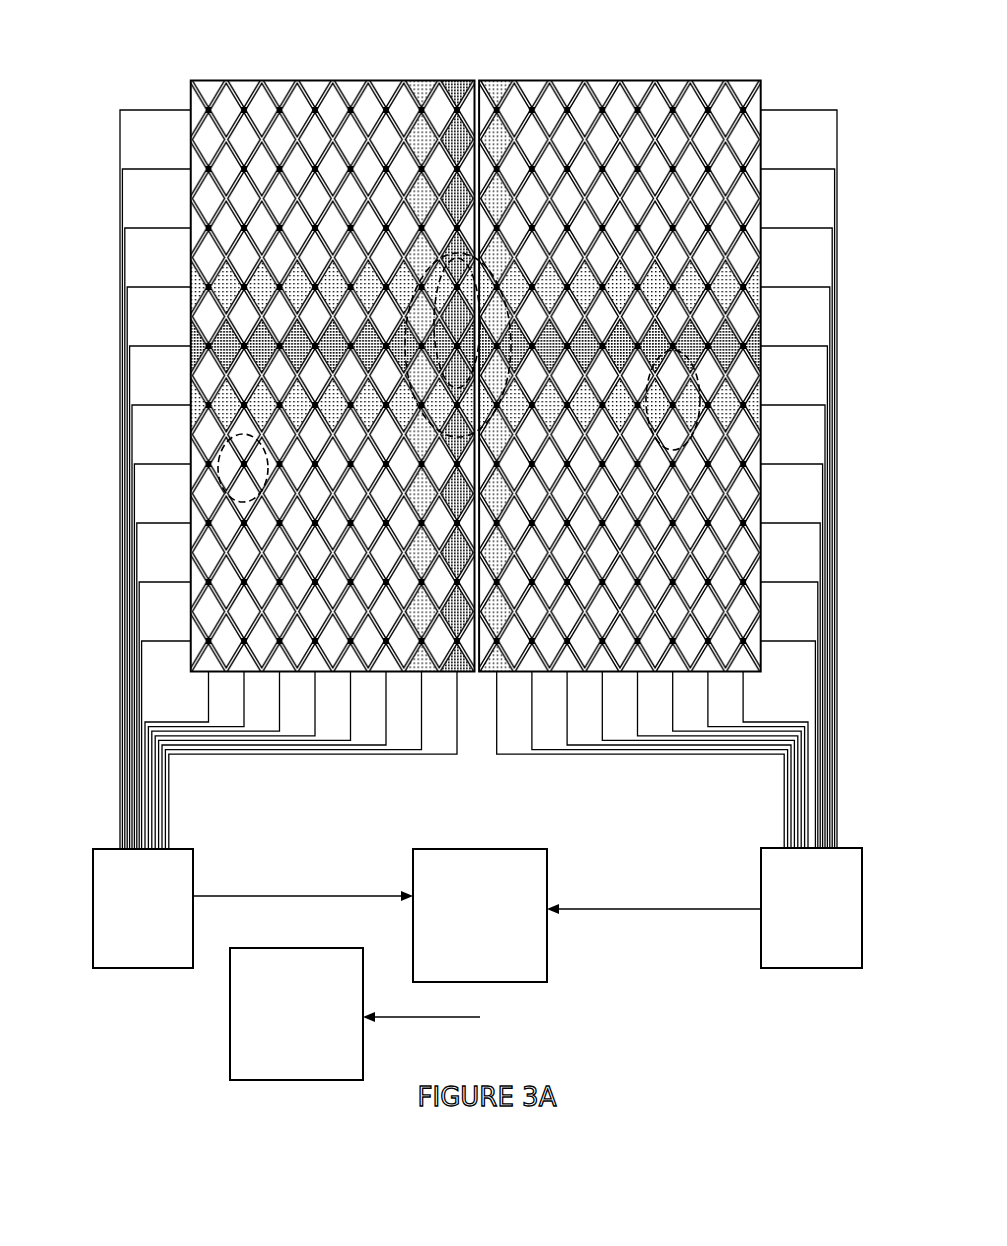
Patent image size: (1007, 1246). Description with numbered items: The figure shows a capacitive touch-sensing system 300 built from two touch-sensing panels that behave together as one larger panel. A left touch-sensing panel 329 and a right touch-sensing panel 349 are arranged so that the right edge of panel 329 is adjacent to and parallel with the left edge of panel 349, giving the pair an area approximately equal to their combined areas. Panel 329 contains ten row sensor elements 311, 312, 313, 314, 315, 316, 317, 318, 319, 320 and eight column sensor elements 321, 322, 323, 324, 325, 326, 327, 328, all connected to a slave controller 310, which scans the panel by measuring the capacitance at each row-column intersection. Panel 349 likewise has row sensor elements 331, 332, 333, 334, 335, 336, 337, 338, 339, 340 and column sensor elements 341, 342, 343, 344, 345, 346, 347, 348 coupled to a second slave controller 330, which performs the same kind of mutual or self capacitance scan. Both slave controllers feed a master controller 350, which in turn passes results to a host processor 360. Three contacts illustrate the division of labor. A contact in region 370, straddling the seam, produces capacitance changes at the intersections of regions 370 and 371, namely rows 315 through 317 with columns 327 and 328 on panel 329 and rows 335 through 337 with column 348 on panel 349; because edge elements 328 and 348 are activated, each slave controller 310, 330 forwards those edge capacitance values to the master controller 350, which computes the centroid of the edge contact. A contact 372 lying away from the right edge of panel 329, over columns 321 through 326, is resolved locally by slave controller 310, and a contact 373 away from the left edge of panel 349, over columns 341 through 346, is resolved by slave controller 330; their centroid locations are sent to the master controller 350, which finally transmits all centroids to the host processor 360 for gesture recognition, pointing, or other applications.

The capacitive touch-sensing system 300 is at (750, 1012).
The slave controller 310 is at (143, 908).
The row sensor element 311 is at (308, 731).
The row sensor element 312 is at (307, 701).
The row sensor element 313 is at (306, 672).
The row sensor element 314 is at (304, 642).
The row sensor element 315 is at (312, 613).
The row sensor element 316 is at (311, 583).
The row sensor element 317 is at (309, 554).
The row sensor element 318 is at (300, 524).
The row sensor element 319 is at (298, 495).
The row sensor element 320 is at (297, 465).
The column sensor element 321 is at (185, 465).
The column sensor element 322 is at (204, 465).
The column sensor element 323 is at (224, 465).
The column sensor element 324 is at (244, 465).
The column sensor element 325 is at (264, 465).
The column sensor element 326 is at (283, 465).
The column sensor element 327 is at (302, 450).
The column sensor element 328 is at (322, 450).
The touch-sensing panel 329 is at (203, 42).
The slave controller 330 is at (811, 908).
The row sensor element 331 is at (647, 730).
The row sensor element 332 is at (648, 701).
The row sensor element 333 is at (649, 671).
The row sensor element 334 is at (651, 642).
The row sensor element 335 is at (644, 612).
The row sensor element 336 is at (645, 583).
The row sensor element 337 is at (646, 553).
The row sensor element 338 is at (655, 524).
The row sensor element 339 is at (657, 494).
The row sensor element 340 is at (658, 465).
The column sensor element 341 is at (767, 465).
The column sensor element 342 is at (747, 465).
The column sensor element 343 is at (728, 465).
The column sensor element 344 is at (709, 465).
The column sensor element 345 is at (690, 465).
The column sensor element 346 is at (671, 465).
The column sensor element 347 is at (650, 465).
The column sensor element 348 is at (631, 449).
The touch-sensing panel 349 is at (748, 46).
The master controller 350 is at (477, 935).
The host processor 360 is at (296, 1014).
The contact region 370 is at (452, 297).
The region 371 is at (457, 323).
The contact 372 is at (243, 458).
The contact 373 is at (673, 400).